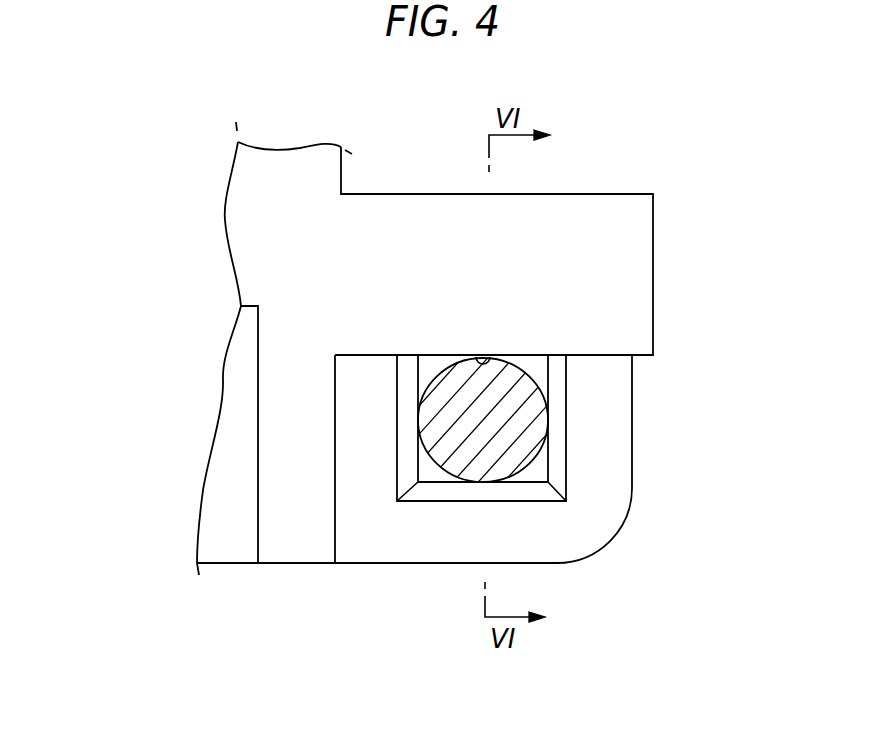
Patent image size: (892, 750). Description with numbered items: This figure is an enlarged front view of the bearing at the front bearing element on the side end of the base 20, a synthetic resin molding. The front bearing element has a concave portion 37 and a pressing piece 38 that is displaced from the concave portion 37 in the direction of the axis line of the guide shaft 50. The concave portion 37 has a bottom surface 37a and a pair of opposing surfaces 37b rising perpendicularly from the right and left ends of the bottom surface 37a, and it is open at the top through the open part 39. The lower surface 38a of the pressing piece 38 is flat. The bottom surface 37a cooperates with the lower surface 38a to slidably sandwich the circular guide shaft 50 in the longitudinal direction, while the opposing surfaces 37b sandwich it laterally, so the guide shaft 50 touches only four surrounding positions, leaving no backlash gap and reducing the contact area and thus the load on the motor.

The base 20 is at (223, 397).
The concave portion 37 is at (540, 468).
The bottom surface 37a is at (440, 480).
The opposing surfaces 37b is at (420, 428).
The pressing piece 38 is at (641, 274).
The lower surface 38a is at (487, 357).
The open part 39 is at (433, 364).
The guide shaft 50 is at (530, 368).